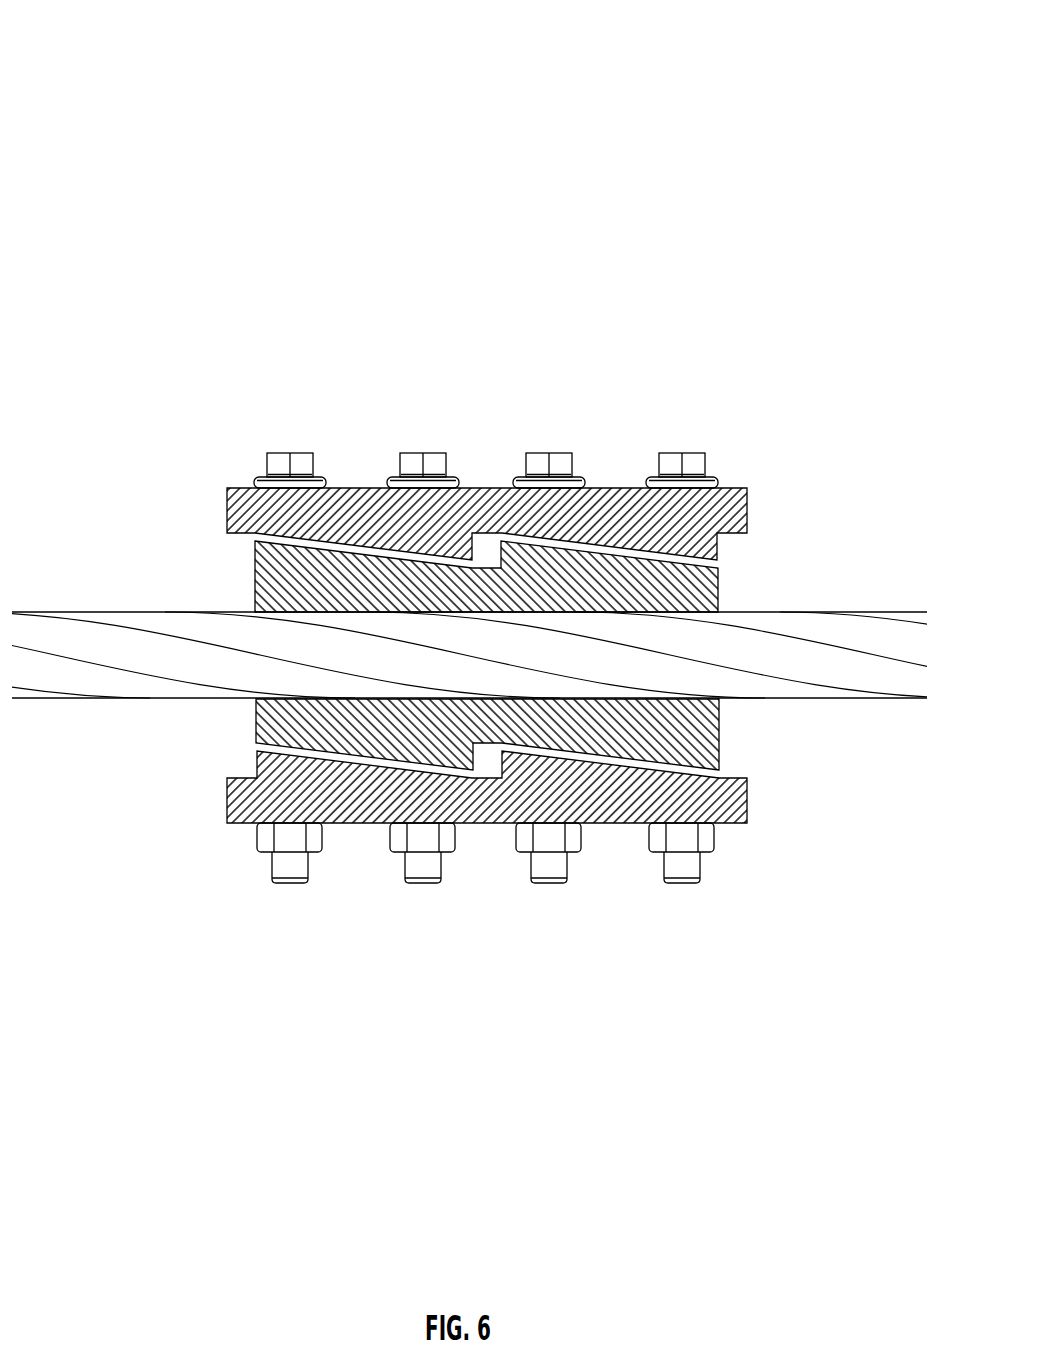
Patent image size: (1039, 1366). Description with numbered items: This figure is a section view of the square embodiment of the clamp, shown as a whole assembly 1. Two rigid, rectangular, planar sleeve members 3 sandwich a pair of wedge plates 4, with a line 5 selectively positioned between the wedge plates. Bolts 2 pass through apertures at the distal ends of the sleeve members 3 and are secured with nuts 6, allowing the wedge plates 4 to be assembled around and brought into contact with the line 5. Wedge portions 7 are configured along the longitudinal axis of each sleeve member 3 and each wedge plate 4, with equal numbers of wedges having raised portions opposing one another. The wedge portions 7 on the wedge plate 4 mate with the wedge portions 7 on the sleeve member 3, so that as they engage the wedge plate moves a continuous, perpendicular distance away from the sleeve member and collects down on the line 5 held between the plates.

The cable clamp assembly 1 is at (78, 53).
The bolt 2 is at (274, 453).
The sleeve member 3 is at (227, 510).
The wedge plate 4 is at (255, 571).
The line 5 is at (152, 698).
The nut 6 is at (265, 853).
The wedge portion 7 is at (718, 545).